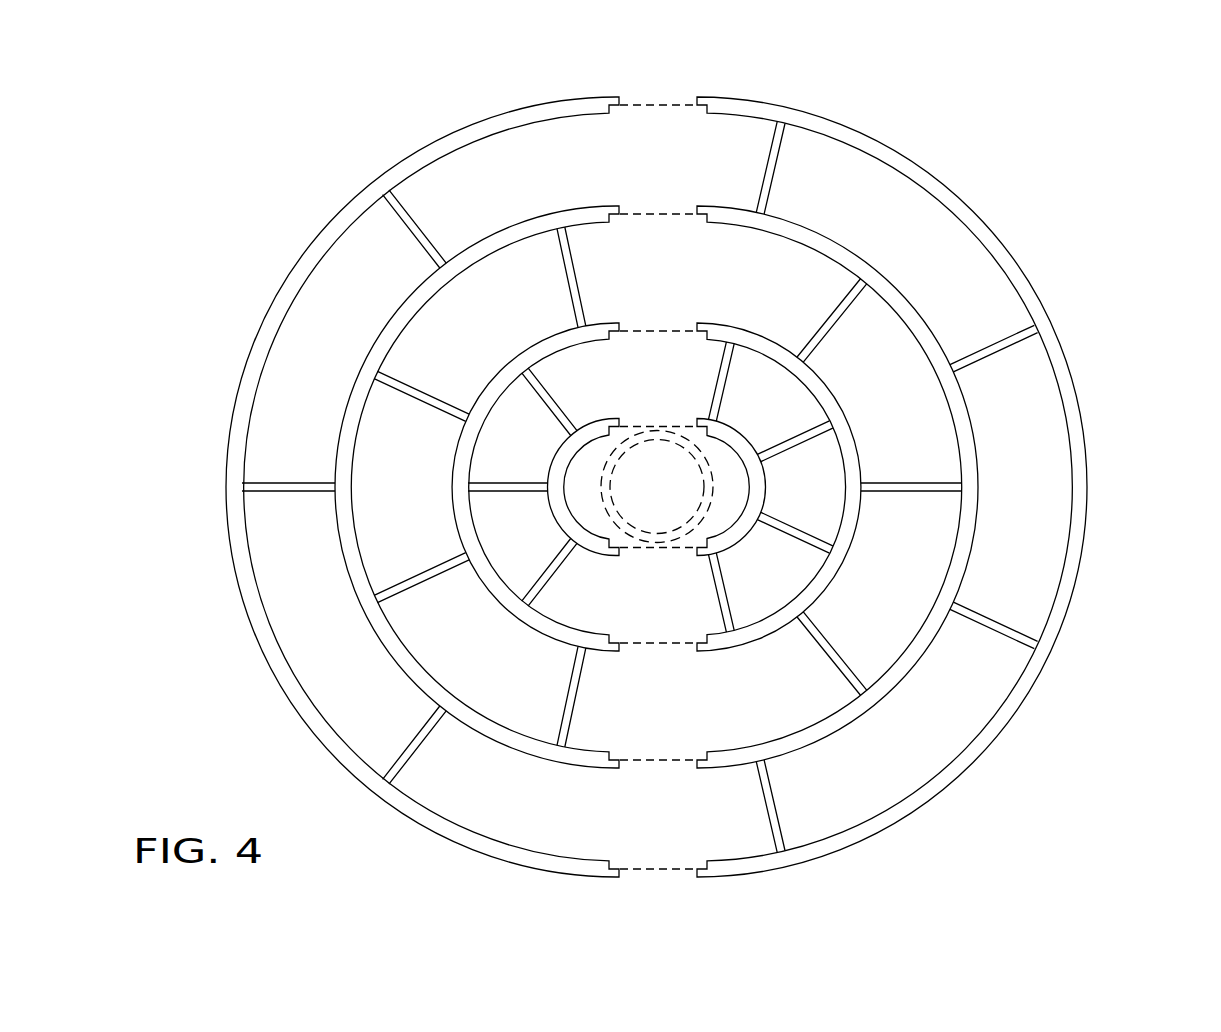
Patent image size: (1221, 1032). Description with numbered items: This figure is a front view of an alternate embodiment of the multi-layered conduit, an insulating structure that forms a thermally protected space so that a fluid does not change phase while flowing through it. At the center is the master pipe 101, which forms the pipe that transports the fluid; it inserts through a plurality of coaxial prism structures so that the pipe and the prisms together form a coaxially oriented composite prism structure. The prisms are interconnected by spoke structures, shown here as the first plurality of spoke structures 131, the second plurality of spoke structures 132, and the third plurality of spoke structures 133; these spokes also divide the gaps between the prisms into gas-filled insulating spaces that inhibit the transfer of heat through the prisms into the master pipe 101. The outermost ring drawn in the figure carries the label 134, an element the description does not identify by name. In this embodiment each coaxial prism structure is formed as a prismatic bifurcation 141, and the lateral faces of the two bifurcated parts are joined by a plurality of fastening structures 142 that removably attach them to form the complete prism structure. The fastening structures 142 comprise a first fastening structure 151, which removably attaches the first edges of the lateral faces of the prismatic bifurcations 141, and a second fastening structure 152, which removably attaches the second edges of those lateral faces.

The master pipe 101 is at (708, 467).
The first plurality of spoke structures 131 is at (760, 478).
The second plurality of spoke structures 132 is at (850, 527).
The third plurality of spoke structures 133 is at (960, 562).
The fourth annular wall 134 is at (1062, 615).
The prismatic bifurcation 141 is at (780, 877).
The plurality of fastening structures 142 is at (650, 383).
The first fastening structure 151 is at (612, 558).
The second fastening structure 152 is at (620, 100).